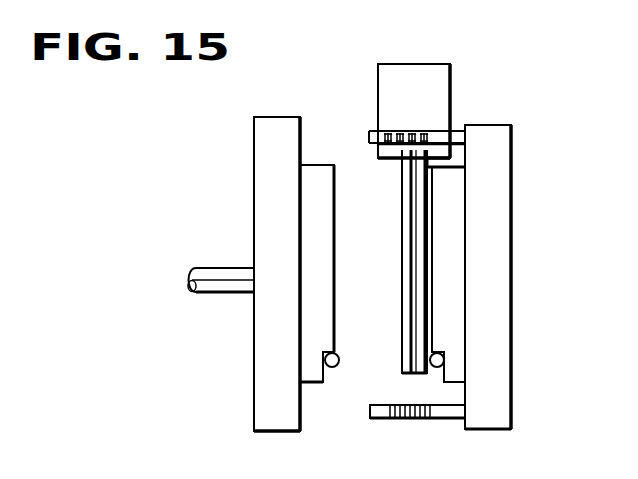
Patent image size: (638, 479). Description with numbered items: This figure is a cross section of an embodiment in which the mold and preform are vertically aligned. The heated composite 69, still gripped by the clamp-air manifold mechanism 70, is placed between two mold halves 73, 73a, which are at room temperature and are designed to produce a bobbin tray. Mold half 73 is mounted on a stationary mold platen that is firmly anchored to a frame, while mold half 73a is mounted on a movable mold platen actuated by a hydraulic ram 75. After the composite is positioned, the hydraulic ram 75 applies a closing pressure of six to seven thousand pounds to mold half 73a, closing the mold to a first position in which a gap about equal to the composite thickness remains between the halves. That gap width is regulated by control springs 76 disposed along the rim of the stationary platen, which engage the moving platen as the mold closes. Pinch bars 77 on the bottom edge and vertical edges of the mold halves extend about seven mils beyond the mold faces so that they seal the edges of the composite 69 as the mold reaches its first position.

The heated composite 69 is at (401, 238).
The clamp-air manifold mechanism 70 is at (452, 84).
The mold half 73 is at (456, 381).
The mold half 73a is at (312, 384).
The hydraulic ram 75 is at (204, 268).
The control springs 76 is at (455, 131).
The pinch bars 77 is at (339, 362).